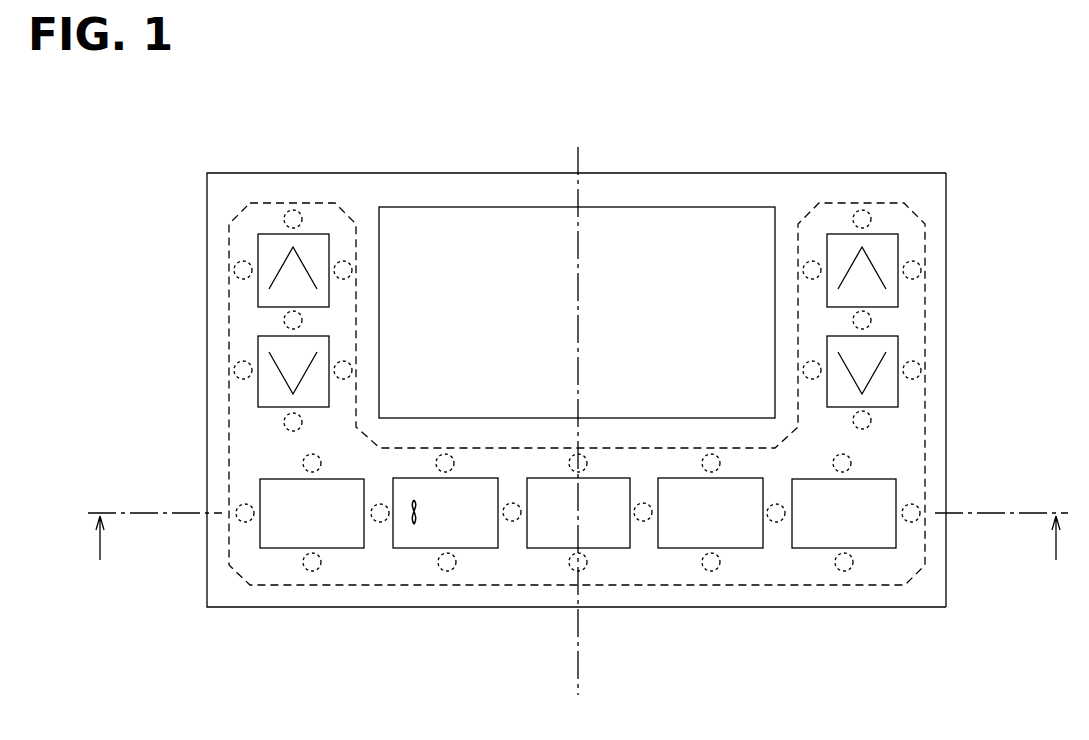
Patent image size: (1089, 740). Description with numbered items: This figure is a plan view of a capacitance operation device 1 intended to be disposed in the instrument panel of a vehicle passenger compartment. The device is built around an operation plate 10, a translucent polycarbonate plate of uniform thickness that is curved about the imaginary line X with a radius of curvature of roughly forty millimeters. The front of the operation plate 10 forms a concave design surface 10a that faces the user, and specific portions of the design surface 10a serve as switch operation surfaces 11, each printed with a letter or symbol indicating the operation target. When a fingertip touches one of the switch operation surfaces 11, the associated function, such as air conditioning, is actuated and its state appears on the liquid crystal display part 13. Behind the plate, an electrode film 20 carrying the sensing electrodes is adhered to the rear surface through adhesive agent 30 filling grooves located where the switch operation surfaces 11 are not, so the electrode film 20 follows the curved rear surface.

The capacitance operation device 1 is at (673, 146).
The operation plate 10 is at (434, 173).
The design surface 10a is at (913, 442).
The switch operation surfaces 11 is at (260, 240).
The liquid crystal display part 13 is at (527, 252).
The electrode film 20 is at (265, 203).
The adhesive agent 30 is at (576, 389).